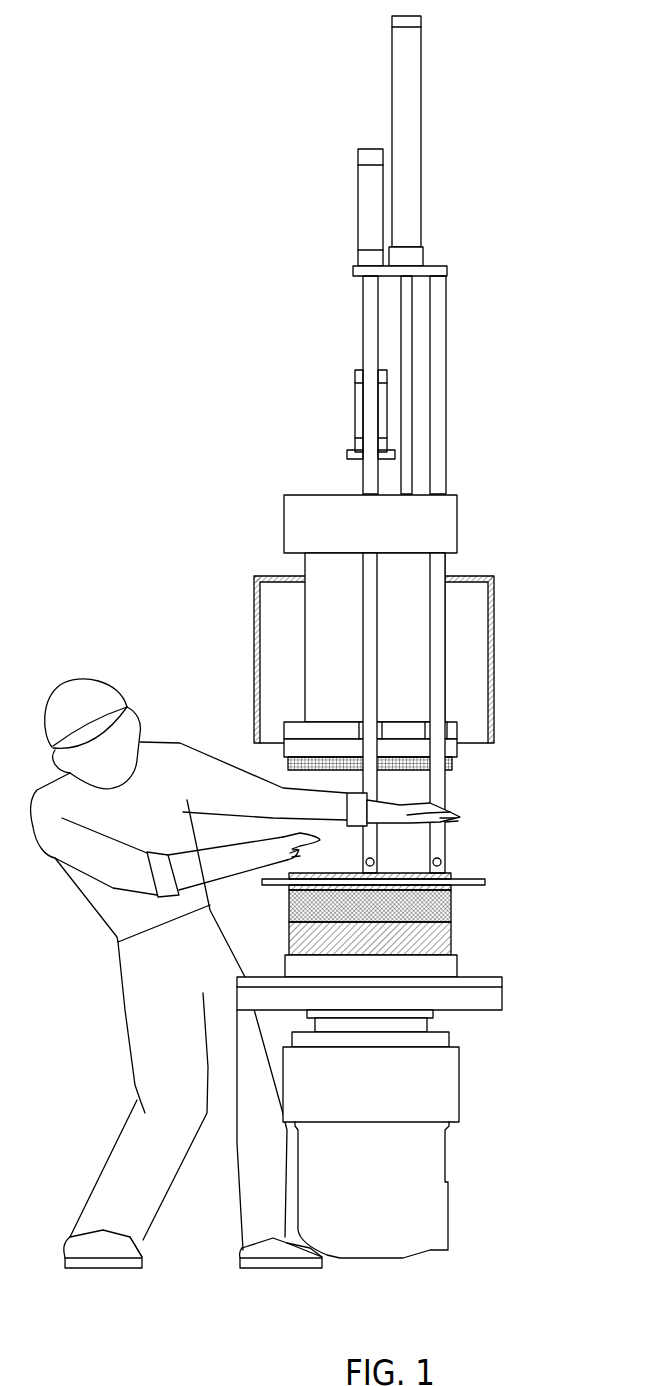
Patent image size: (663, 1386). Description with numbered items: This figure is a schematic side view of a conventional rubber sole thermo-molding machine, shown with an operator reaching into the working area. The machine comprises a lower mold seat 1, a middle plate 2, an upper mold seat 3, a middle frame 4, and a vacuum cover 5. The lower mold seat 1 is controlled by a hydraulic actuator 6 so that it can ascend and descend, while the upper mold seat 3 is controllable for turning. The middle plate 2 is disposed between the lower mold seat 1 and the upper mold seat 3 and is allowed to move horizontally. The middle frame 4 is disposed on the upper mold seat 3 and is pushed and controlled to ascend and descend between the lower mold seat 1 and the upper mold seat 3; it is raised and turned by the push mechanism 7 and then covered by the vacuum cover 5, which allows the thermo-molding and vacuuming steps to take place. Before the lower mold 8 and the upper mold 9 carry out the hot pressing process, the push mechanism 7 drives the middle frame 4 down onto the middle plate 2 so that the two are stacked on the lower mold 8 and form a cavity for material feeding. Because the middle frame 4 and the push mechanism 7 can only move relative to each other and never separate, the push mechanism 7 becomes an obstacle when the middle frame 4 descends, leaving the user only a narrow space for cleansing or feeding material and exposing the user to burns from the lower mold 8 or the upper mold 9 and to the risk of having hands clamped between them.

The lower mold seat 1 is at (450, 965).
The middle plate 2 is at (452, 875).
The upper mold seat 3 is at (450, 749).
The middle frame 4 is at (452, 908).
The vacuum cover 5 is at (493, 627).
The hydraulic actuator 6 is at (428, 1153).
The push mechanism 7 is at (468, 352).
The lower mold 8 is at (452, 944).
The upper mold 9 is at (450, 766).